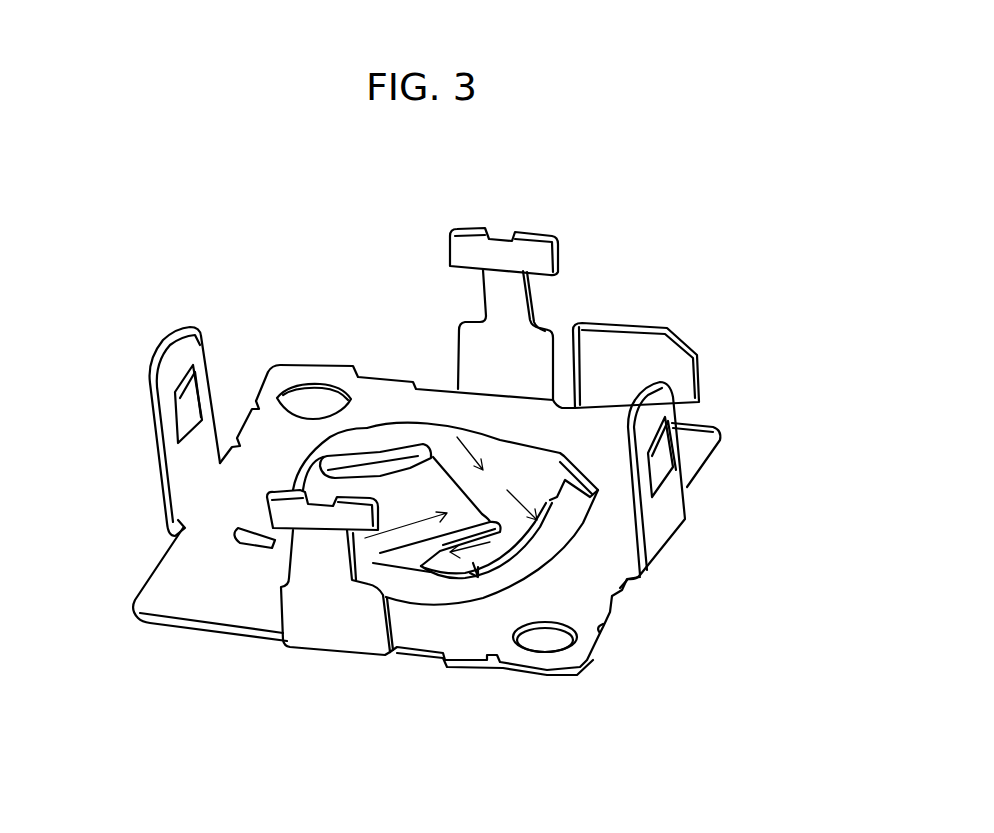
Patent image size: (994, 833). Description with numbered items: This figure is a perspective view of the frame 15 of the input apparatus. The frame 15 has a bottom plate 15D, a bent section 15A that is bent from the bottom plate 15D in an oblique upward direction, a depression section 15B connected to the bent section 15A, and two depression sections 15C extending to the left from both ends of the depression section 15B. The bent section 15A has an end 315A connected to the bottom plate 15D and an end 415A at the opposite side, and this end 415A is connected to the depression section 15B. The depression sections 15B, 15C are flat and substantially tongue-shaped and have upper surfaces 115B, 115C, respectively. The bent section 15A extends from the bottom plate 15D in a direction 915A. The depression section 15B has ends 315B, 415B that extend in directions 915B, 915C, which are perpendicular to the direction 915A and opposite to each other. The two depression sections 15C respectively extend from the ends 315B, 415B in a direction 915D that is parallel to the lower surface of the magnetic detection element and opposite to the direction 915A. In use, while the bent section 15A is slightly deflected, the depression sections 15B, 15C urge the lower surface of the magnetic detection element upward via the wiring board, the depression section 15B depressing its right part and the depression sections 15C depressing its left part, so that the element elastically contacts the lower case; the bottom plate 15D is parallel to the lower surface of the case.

The frame 15 is at (650, 212).
The bent section 15A is at (410, 527).
The depression section 15B is at (550, 472).
The depression sections 15C is at (363, 443).
The bottom plate 15D is at (182, 575).
The upper surface 115B is at (560, 392).
The upper surface 115C is at (373, 433).
The end 315A is at (278, 565).
The end 315B is at (600, 629).
The end 415A is at (433, 450).
The end 415B is at (414, 447).
The direction 915A is at (440, 557).
The direction 915B is at (520, 505).
The direction 915C is at (465, 515).
The direction 915D is at (517, 538).